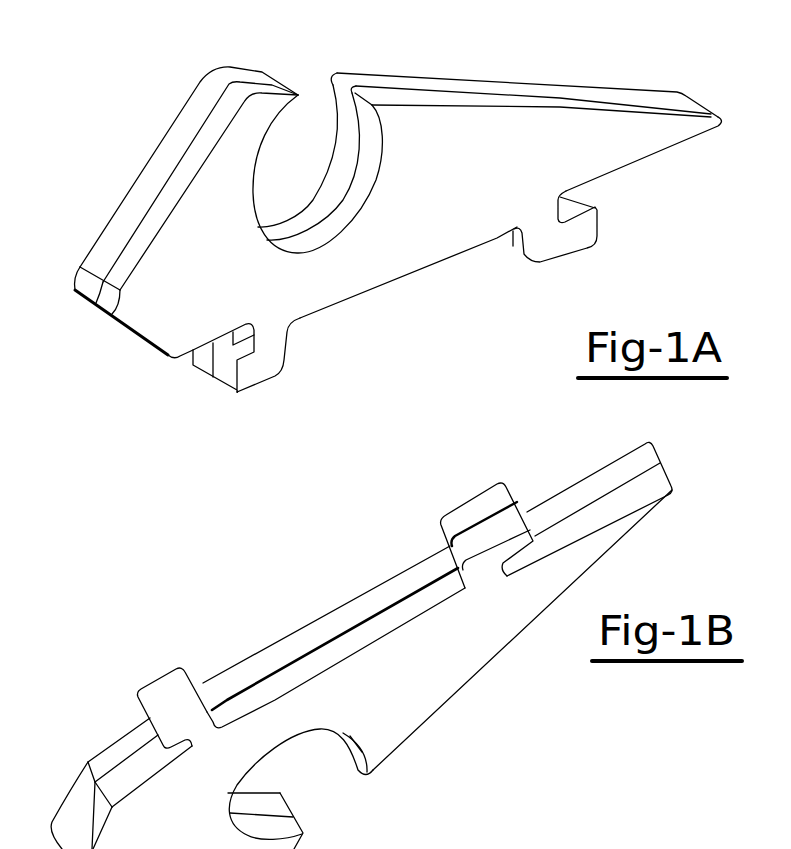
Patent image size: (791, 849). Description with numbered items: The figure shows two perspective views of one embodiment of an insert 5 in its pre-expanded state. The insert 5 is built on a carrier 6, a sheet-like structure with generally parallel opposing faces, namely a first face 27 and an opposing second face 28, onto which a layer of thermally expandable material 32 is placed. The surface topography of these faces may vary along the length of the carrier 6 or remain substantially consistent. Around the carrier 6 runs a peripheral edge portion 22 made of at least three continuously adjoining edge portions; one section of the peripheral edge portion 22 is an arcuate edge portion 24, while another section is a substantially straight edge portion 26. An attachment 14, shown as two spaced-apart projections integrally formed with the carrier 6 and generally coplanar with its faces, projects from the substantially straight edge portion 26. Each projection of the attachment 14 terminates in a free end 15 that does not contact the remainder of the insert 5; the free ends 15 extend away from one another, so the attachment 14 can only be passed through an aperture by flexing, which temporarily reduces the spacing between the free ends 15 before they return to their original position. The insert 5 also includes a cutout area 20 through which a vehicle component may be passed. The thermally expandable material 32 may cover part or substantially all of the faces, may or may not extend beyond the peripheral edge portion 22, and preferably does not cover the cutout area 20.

In FIG. 1A, the insert 5 is at (370, 233).
In FIG. 1A, the carrier 6 is at (640, 88).
In FIG. 1B, the carrier 6 is at (589, 509).
In FIG. 1A, the attachment 14 is at (262, 378).
In FIG. 1B, the attachment 14 is at (475, 510).
In FIG. 1A, the free ends 15 is at (227, 373).
In FIG. 1A, the cutout area 20 is at (310, 122).
In FIG. 1B, the cutout area 20 is at (300, 789).
In FIG. 1A, the peripheral edge portion 22 is at (538, 80).
In FIG. 1A, the arcuate edge portion 24 is at (85, 290).
In FIG. 1A, the substantially straight edge portion 26 is at (320, 313).
In FIG. 1A, the first face 27 is at (153, 320).
In FIG. 1B, the first face 27 is at (358, 595).
In FIG. 1A, the second face 28 is at (127, 197).
In FIG. 1B, the second face 28 is at (450, 683).
In FIG. 1A, the thermally expandable material 32 is at (432, 122).
In FIG. 1B, the thermally expandable material 32 is at (510, 618).